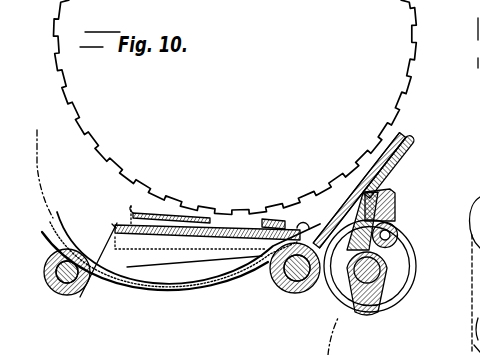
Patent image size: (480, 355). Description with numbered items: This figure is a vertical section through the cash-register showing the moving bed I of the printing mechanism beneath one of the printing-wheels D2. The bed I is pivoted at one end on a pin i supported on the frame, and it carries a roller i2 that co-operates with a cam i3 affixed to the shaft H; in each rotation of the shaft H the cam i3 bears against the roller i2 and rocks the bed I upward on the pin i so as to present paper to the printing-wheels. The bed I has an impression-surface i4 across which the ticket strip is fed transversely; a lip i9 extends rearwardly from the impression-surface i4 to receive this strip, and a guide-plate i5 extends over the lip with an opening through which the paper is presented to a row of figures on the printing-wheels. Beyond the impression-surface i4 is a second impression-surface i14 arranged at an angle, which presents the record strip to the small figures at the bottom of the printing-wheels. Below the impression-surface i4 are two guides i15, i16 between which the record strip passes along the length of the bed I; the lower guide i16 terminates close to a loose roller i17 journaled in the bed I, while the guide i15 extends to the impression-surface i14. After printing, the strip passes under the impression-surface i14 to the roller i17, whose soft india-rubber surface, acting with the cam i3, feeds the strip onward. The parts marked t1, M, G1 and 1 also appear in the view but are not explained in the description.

The printing-wheel D2 is at (114, 151).
The pin i is at (58, 294).
The moving bed I is at (97, 279).
The lower guide i16 is at (157, 287).
The guide i15 is at (165, 266).
The impression-surface i4 is at (183, 236).
The guide-plate i5 is at (133, 211).
The dotted frame t' t1 is at (184, 228).
The lip i9 is at (112, 224).
The impression-surface i14 is at (397, 166).
The roller i2 is at (398, 237).
The shaft H is at (357, 275).
The cam i3 is at (381, 283).
The loose roller i17 is at (278, 292).
The adjacent member M is at (471, 221).
The member G1 is at (478, 329).
The member 1 is at (478, 349).